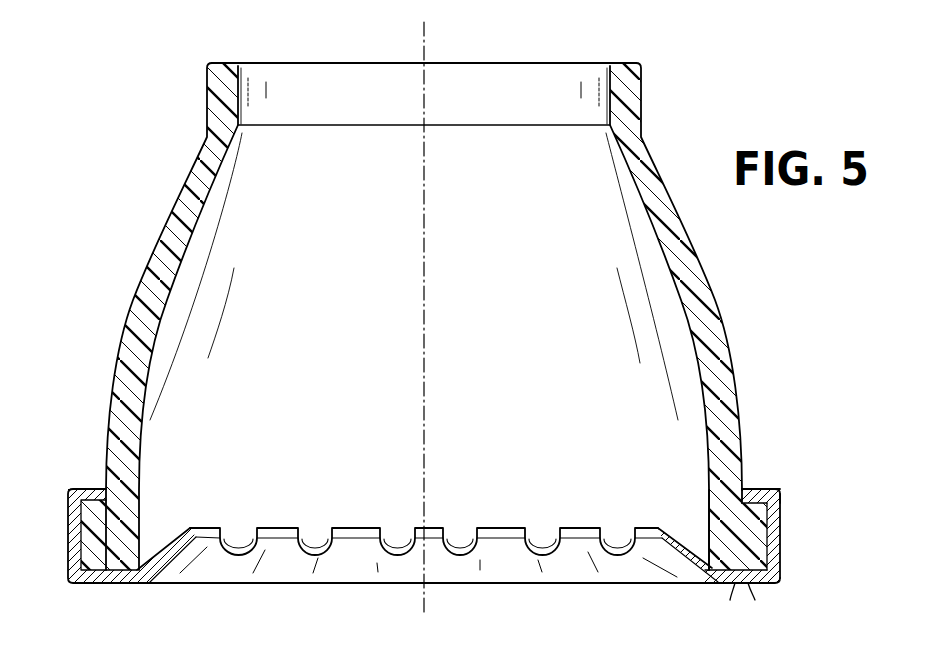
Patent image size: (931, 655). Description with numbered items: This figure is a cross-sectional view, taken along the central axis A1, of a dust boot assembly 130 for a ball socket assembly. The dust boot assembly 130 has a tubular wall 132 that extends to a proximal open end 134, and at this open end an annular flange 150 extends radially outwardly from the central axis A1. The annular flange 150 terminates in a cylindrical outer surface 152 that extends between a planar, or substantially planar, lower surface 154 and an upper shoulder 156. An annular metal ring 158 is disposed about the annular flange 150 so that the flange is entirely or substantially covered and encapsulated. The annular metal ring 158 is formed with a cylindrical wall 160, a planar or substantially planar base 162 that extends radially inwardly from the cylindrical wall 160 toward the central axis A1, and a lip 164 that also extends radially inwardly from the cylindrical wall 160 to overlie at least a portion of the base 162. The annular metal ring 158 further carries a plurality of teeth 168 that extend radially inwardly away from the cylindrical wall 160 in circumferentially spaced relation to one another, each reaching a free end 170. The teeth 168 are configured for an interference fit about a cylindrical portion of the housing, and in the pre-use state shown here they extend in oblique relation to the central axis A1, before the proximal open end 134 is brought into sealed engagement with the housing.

The dust boot assembly 130 is at (78, 137).
The tubular wall 132 is at (716, 342).
The proximal open end 134 is at (117, 584).
The annular flange 150 is at (766, 530).
The cylindrical outer surface 152 is at (773, 553).
The lower surface 154 is at (734, 584).
The upper shoulder 156 is at (762, 488).
The annular metal ring 158 is at (781, 494).
The cylindrical wall 160 is at (781, 516).
The base 162 is at (750, 584).
The lip 164 is at (747, 488).
The teeth 168 is at (356, 527).
The free ends 170 is at (484, 527).
The central axis A1 is at (425, 32).